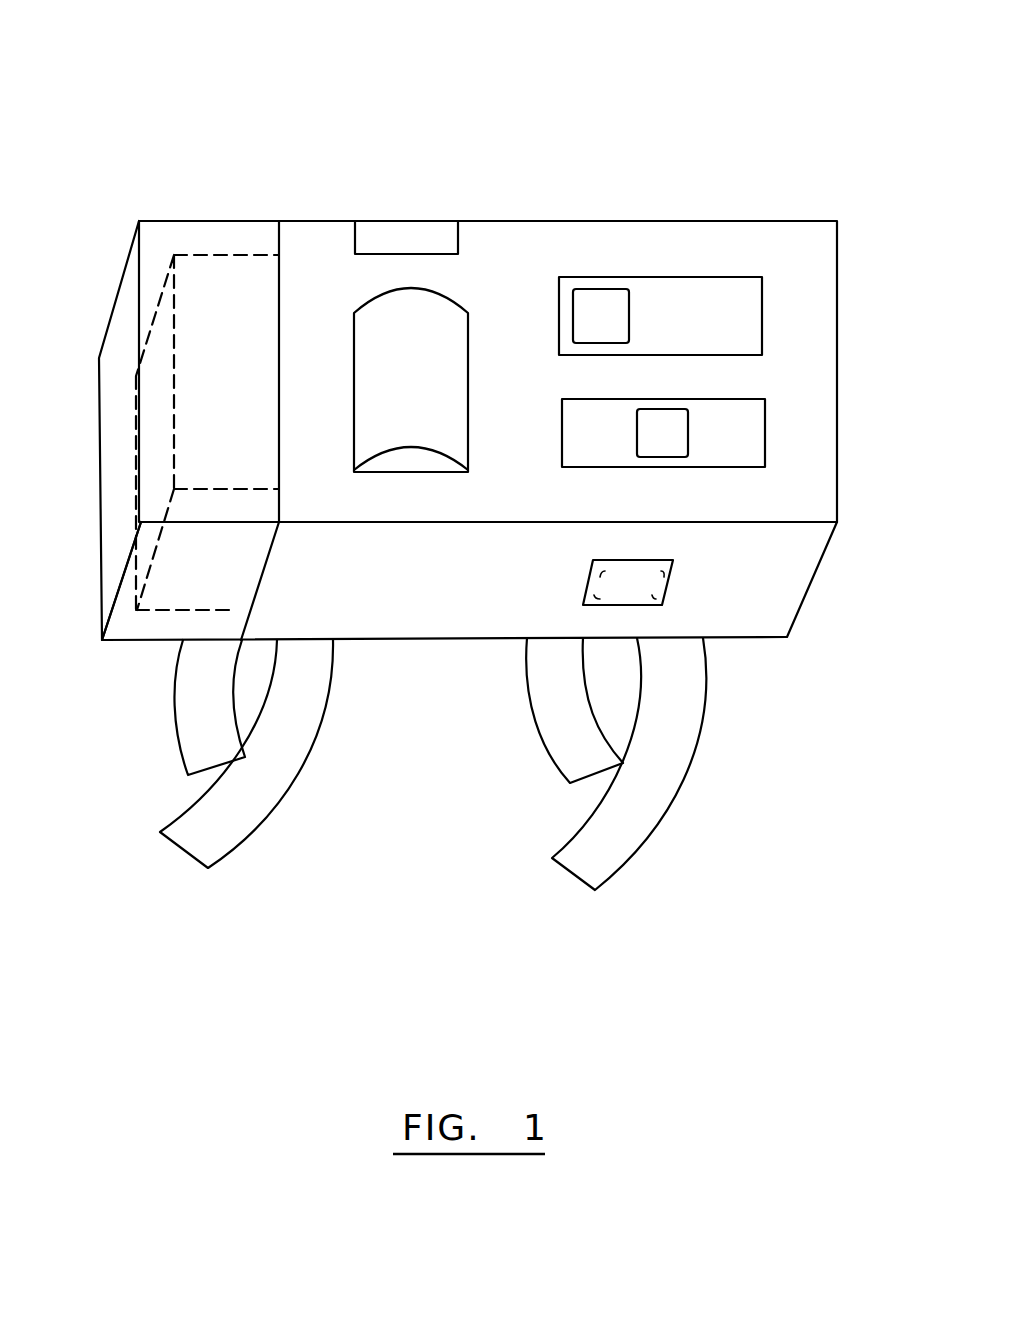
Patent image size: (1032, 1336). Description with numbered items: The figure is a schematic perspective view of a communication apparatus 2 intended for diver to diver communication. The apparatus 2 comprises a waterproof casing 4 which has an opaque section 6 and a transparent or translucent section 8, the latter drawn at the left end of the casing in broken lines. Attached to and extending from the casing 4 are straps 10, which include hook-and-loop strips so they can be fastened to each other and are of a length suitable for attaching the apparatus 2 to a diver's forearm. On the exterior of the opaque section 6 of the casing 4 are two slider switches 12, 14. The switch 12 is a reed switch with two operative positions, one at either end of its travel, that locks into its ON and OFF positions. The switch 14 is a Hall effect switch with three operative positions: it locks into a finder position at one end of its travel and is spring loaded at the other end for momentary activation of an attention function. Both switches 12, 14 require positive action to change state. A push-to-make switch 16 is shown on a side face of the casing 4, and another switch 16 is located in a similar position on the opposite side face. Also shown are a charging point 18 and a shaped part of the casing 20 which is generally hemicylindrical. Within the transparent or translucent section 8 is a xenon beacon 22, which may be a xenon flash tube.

The communication apparatus 2 is at (489, 508).
The waterproof casing 4 is at (837, 318).
The opaque section 6 is at (748, 598).
The transparent or translucent section 8 is at (138, 618).
The straps 10 is at (193, 708).
The slider switch 12 is at (603, 312).
The slider switch 14 is at (662, 429).
The push-to-make switch 16 is at (645, 578).
The charging point 18 is at (407, 232).
The shaped part of the casing 20 is at (389, 372).
The xenon beacon 22 is at (208, 253).